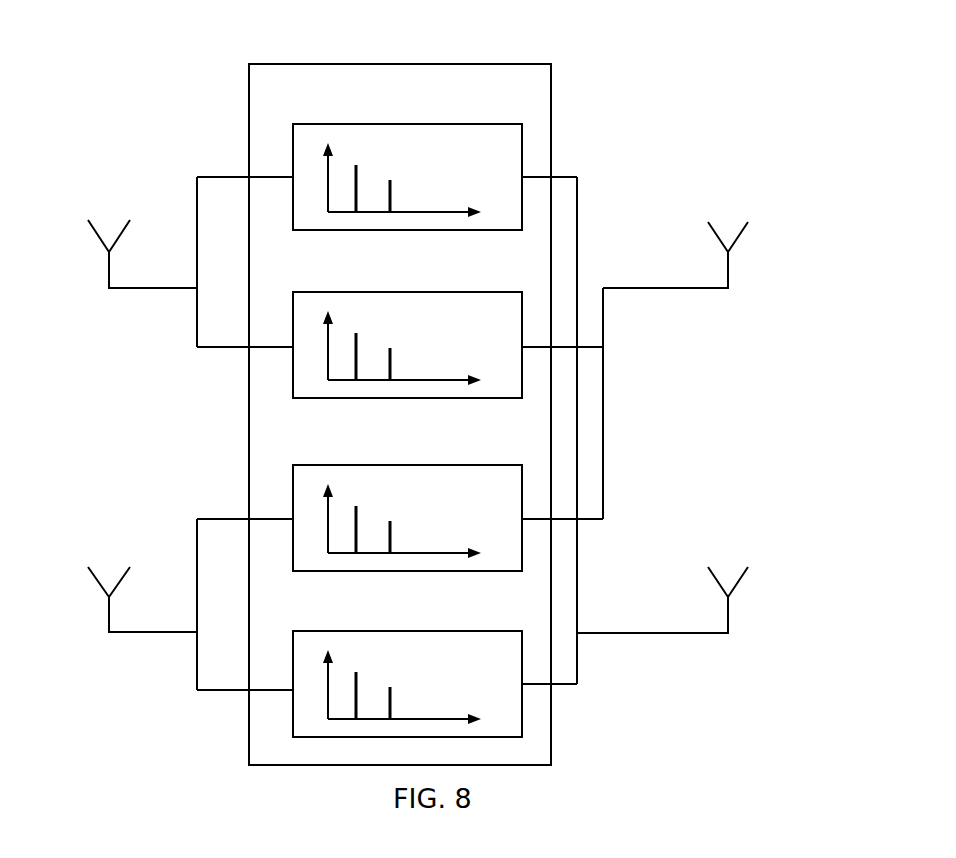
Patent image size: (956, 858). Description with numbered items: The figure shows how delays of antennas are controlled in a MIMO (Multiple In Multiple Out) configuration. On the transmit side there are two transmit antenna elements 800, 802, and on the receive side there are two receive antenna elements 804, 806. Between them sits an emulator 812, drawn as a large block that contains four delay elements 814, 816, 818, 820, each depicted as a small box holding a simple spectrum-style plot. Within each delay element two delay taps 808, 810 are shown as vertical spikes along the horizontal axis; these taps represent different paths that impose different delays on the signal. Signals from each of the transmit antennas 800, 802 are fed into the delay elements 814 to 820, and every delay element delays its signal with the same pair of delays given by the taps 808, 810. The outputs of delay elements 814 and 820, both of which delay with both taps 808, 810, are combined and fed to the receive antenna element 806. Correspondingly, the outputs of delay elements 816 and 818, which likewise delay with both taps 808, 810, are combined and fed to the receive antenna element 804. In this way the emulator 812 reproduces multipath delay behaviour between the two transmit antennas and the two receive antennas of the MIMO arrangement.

The transmit antenna element 800 is at (98, 223).
The transmit antenna element 802 is at (98, 570).
The receive antenna element 804 is at (718, 226).
The receive antenna element 806 is at (718, 571).
The delay tap 808 is at (356, 165).
The delay tap 810 is at (390, 180).
The emulator 812 is at (518, 64).
The delay element 814 is at (432, 124).
The delay element 816 is at (438, 292).
The delay element 818 is at (440, 465).
The delay element 820 is at (444, 631).